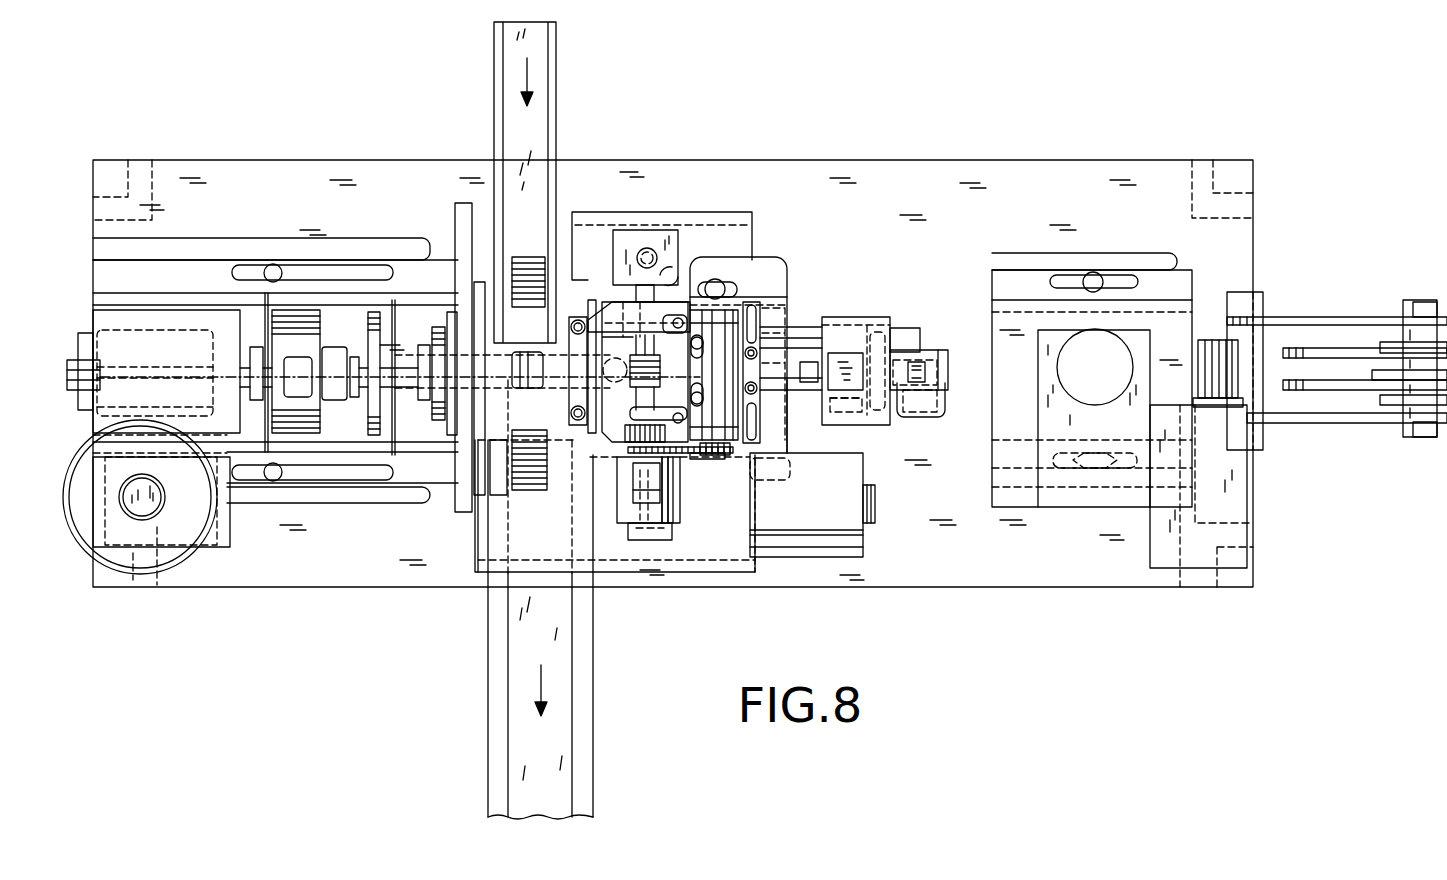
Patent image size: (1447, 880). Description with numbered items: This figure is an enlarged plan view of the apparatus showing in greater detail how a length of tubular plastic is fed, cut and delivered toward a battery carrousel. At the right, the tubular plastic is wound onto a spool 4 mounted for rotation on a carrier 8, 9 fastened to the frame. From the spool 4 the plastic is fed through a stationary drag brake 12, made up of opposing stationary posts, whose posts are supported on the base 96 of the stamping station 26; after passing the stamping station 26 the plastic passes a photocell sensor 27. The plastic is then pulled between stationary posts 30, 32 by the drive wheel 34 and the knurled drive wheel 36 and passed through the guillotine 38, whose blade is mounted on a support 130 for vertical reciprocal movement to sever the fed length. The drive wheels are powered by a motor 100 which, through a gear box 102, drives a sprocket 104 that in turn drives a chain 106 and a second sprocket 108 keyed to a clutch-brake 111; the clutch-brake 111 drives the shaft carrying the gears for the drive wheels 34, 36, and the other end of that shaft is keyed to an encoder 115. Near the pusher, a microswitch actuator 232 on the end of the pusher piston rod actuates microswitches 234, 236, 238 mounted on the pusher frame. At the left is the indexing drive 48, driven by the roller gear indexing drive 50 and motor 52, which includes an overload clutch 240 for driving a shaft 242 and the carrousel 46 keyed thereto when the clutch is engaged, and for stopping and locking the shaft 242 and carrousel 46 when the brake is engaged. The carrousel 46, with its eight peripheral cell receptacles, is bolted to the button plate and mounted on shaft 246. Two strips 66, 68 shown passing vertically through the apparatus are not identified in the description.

The spool 4 is at (1378, 358).
The carrier 8 is at (1398, 322).
The carrier 9 is at (1335, 420).
The stationary drag brake 12 is at (1204, 318).
The stamping station 26 is at (1111, 374).
The photocell sensor 27 is at (850, 372).
The stationary post 30 is at (757, 392).
The stationary post 32 is at (757, 352).
The drive wheel 34 is at (658, 372).
The knurled drive wheel 36 is at (707, 318).
The guillotine 38 is at (603, 318).
The carrousel 46 is at (527, 310).
The indexing drive 48 is at (183, 340).
The roller gear indexing drive 50 is at (222, 545).
The motor 52 is at (160, 535).
The strip 66 is at (545, 73).
The strip 68 is at (516, 670).
The base 96 is at (1020, 325).
The motor 100 is at (812, 545).
The gear box 102 is at (717, 538).
The sprocket 104 is at (722, 452).
The chain 106 is at (692, 456).
The sprocket 108 is at (650, 453).
The clutch-brake 111 is at (663, 512).
The encoder 115 is at (646, 237).
The support 130 is at (660, 310).
The microswitch actuator 232 is at (915, 373).
The microswitch 234 is at (930, 412).
The microswitch 236 is at (868, 428).
The microswitch 238 is at (897, 328).
The overload clutch 240 is at (300, 320).
The shaft 242 is at (398, 390).
The shaft 246 is at (497, 515).